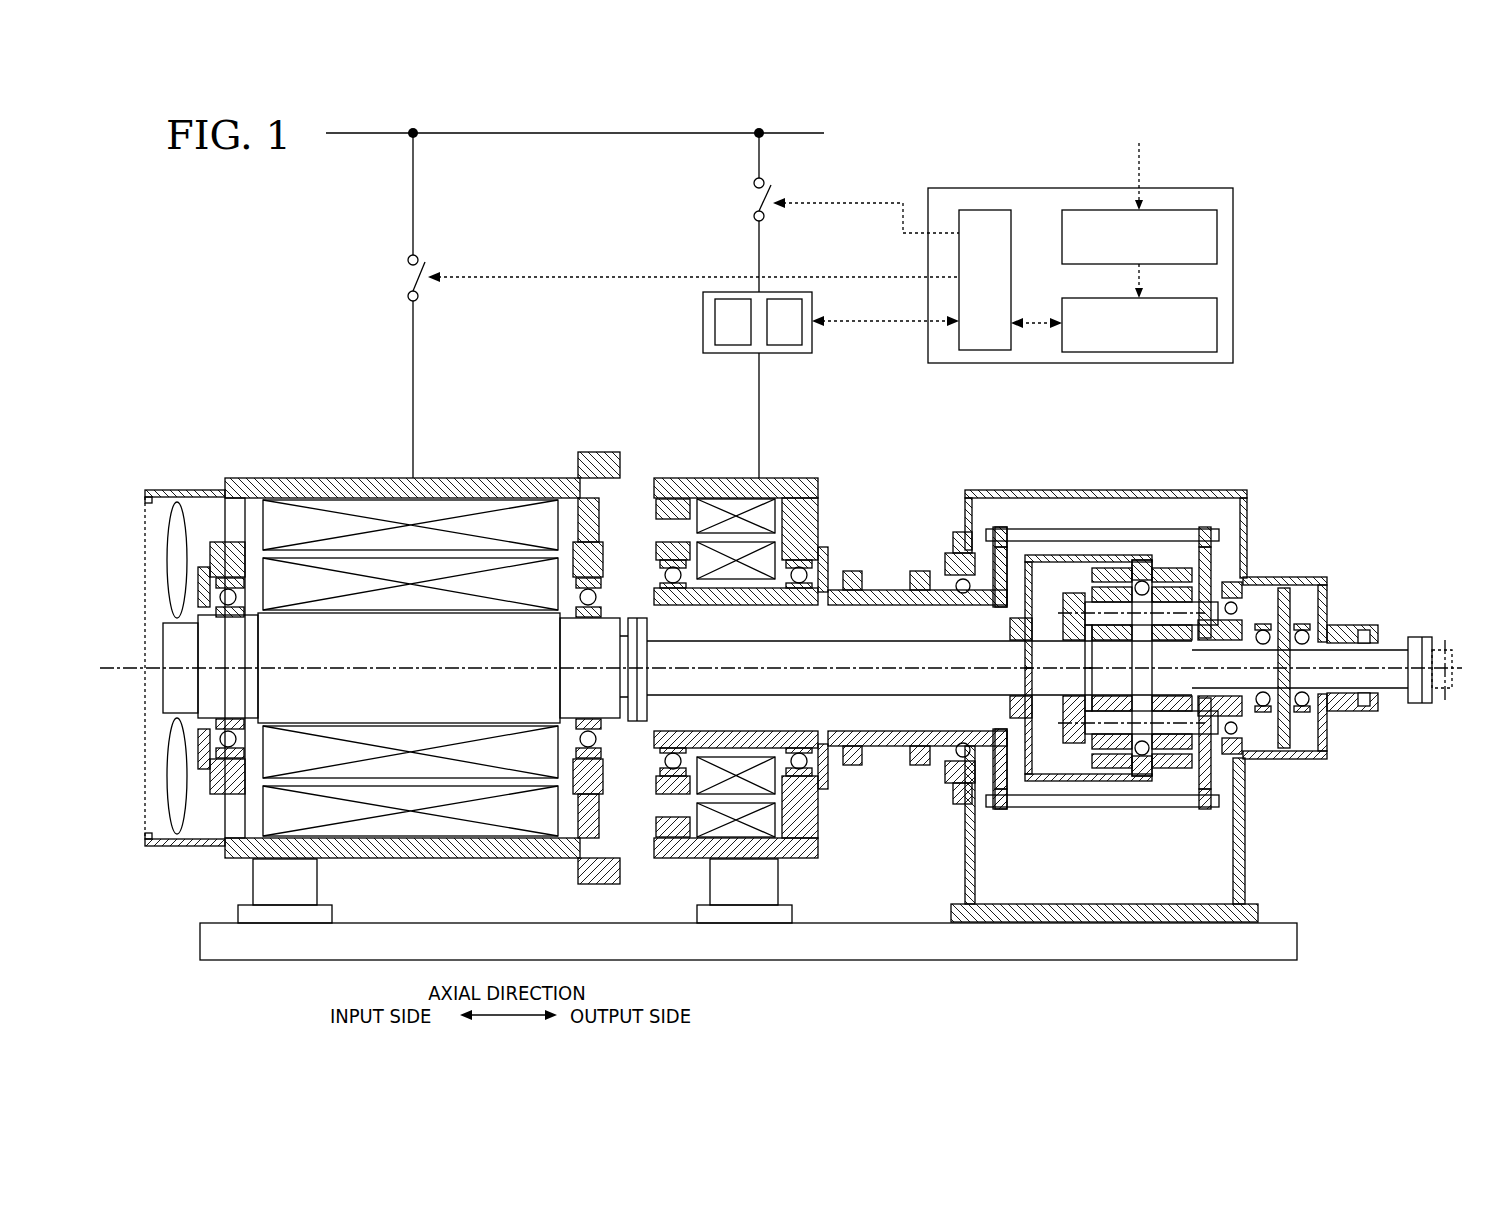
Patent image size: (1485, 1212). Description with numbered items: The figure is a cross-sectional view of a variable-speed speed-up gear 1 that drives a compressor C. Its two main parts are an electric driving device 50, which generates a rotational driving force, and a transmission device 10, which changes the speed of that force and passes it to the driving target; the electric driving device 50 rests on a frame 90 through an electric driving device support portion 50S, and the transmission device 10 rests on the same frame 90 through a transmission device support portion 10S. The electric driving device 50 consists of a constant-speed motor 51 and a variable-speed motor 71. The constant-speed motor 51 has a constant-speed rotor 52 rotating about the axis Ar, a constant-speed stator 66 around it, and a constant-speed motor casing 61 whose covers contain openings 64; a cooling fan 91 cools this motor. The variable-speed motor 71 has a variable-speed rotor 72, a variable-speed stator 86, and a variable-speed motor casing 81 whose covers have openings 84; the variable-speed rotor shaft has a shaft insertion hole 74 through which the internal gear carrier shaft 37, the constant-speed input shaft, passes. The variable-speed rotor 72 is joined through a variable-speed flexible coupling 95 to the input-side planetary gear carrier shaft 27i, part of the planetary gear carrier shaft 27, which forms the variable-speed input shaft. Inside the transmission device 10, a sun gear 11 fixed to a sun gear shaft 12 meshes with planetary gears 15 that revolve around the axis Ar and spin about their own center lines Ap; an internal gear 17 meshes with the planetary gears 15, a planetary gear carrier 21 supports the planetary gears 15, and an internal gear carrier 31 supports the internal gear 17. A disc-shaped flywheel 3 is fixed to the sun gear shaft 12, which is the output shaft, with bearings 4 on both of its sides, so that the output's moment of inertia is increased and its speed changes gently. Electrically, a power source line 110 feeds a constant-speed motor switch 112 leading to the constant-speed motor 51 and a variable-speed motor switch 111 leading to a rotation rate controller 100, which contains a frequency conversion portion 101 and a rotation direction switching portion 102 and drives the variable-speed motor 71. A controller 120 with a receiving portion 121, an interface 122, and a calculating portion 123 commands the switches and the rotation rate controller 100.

The variable-speed speed-up gear 1 is at (1322, 178).
The flywheel 3 is at (1288, 624).
The bearings 4 is at (1266, 633).
The transmission device 10 is at (1247, 479).
The transmission device support portion 10S is at (1240, 880).
The sun gear 11 is at (1185, 680).
The sun gear shaft 12 is at (1396, 690).
The planetary gears 15 is at (1180, 592).
The internal gear 17 is at (1168, 575).
The planetary gear carrier 21 is at (1222, 546).
The planetary gear carrier shaft 27 is at (1015, 608).
The input-side planetary gear carrier shaft 27i is at (982, 598).
The internal gear carrier 31 is at (1085, 786).
The internal gear carrier shaft 37 is at (993, 682).
The electric driving device 50 is at (336, 331).
The electric driving device support portion 50S is at (330, 885).
The constant-speed motor 51 is at (277, 471).
The constant-speed rotor 52 is at (511, 548).
The constant-speed motor casing 61 is at (455, 488).
The openings 64 is at (232, 512).
The constant-speed stator 66 is at (340, 522).
The variable-speed motor 71 is at (794, 478).
The variable-speed rotor 72 is at (746, 757).
The shaft insertion hole 74 is at (637, 612).
The variable-speed motor casing 81 is at (641, 852).
The openings 84 is at (668, 514).
The variable-speed stator 86 is at (725, 787).
The frame 90 is at (1298, 948).
The cooling fan 91 is at (180, 822).
The variable-speed flexible coupling 95 is at (880, 590).
The rotation rate controller 100 is at (815, 346).
The frequency conversion portion 101 is at (732, 299).
The rotation direction switching portion 102 is at (782, 299).
The power source line 110 is at (600, 136).
The variable-speed motor switch 111 is at (773, 190).
The constant-speed motor switch 112 is at (427, 263).
The controller 120 is at (1200, 188).
The receiving portion 121 is at (1217, 233).
The interface 122 is at (1000, 210).
The calculating portion 123 is at (1217, 323).
The center lines of planetary gears Ap is at (1185, 608).
The compressor C is at (1426, 640).
The axis Ar is at (1440, 690).